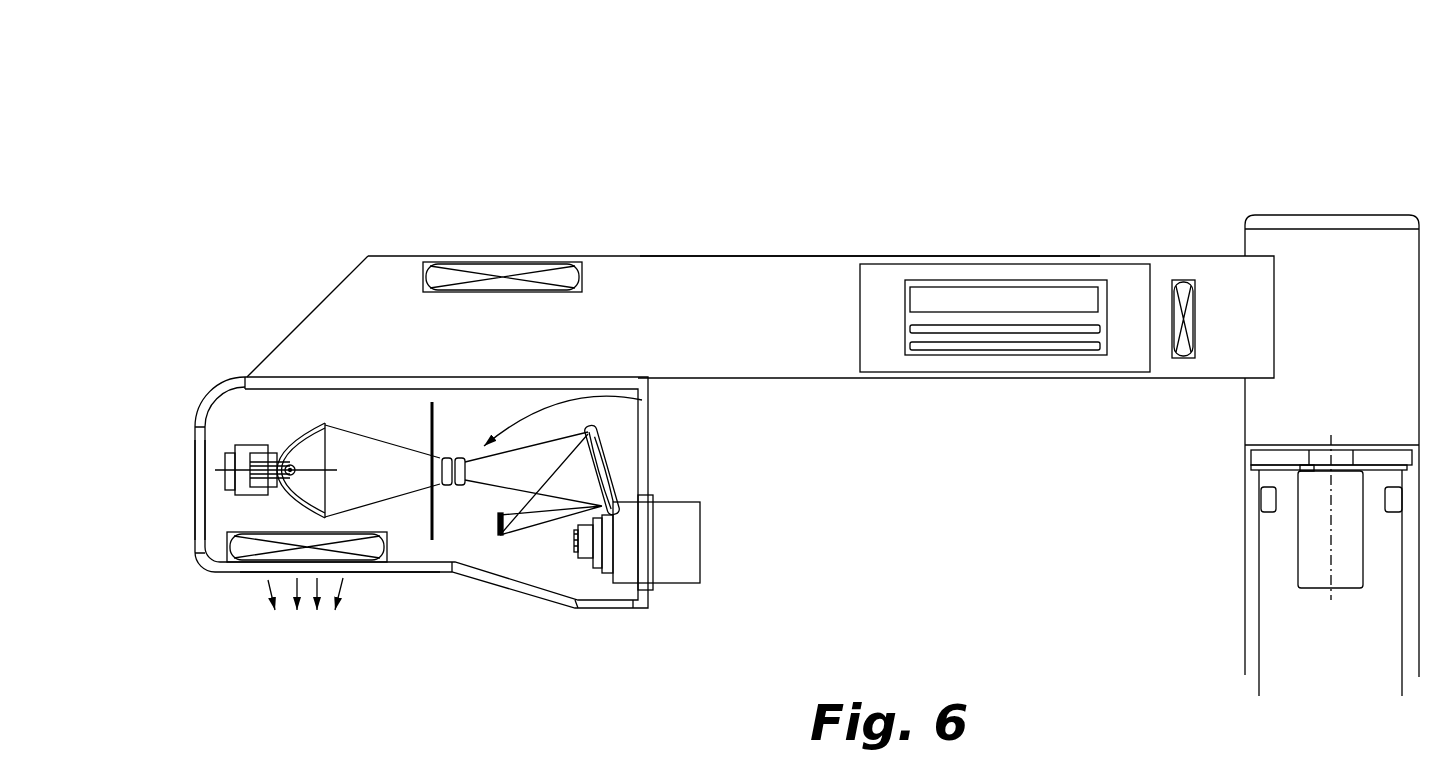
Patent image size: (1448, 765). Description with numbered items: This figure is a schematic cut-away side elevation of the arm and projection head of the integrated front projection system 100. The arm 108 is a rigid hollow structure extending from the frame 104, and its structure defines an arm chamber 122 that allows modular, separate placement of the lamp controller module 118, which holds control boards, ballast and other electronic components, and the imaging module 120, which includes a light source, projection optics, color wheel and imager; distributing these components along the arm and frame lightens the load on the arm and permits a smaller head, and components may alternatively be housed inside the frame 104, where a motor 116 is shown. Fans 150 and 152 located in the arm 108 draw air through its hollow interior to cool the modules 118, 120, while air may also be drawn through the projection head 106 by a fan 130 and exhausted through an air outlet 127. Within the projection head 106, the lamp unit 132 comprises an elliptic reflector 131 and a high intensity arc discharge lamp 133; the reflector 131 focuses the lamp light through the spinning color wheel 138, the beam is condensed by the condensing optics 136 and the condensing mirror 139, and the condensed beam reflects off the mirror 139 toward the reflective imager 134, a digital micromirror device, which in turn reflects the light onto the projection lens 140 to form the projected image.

The projection system 100 is at (431, 168).
The frame 104 is at (1265, 645).
The projection head 106 is at (545, 622).
The arm 108 is at (607, 256).
The motor 116 is at (1305, 568).
The lamp controller module 118 is at (1005, 272).
The imaging module 120 is at (181, 517).
The arm chamber 122 is at (705, 272).
The air outlet 127 is at (360, 580).
The fan 130 is at (243, 552).
The reflector 131 is at (282, 437).
The lamp unit 132 is at (242, 441).
The lamp 133 is at (316, 460).
The imager 134 is at (498, 527).
The condensing optics 136 is at (642, 400).
The color wheel 138 is at (430, 500).
The condensing mirror 139 is at (612, 470).
The projection lens 140 is at (677, 578).
The fan 150 is at (527, 262).
The fan 152 is at (1181, 282).